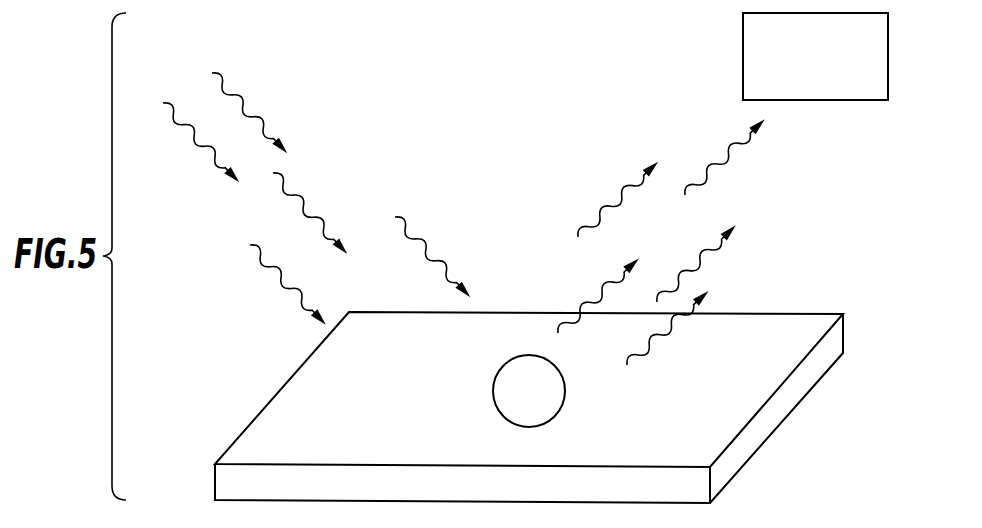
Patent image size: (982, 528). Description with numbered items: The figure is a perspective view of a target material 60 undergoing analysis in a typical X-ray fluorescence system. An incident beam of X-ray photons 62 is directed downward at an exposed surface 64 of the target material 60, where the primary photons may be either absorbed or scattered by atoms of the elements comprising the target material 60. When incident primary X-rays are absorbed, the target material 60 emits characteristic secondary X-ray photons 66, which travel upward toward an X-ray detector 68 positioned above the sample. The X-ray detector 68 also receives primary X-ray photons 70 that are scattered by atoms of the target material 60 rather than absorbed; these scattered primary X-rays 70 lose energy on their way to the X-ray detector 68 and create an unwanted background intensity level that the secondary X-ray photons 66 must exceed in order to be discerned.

The target material 60 is at (300, 457).
The incident beam of X-ray photons 62 is at (243, 100).
The exposed surface 64 is at (548, 405).
The secondary X-ray photons 66 is at (722, 178).
The X-ray detector 68 is at (830, 80).
The primary X-ray photons 70 is at (608, 200).